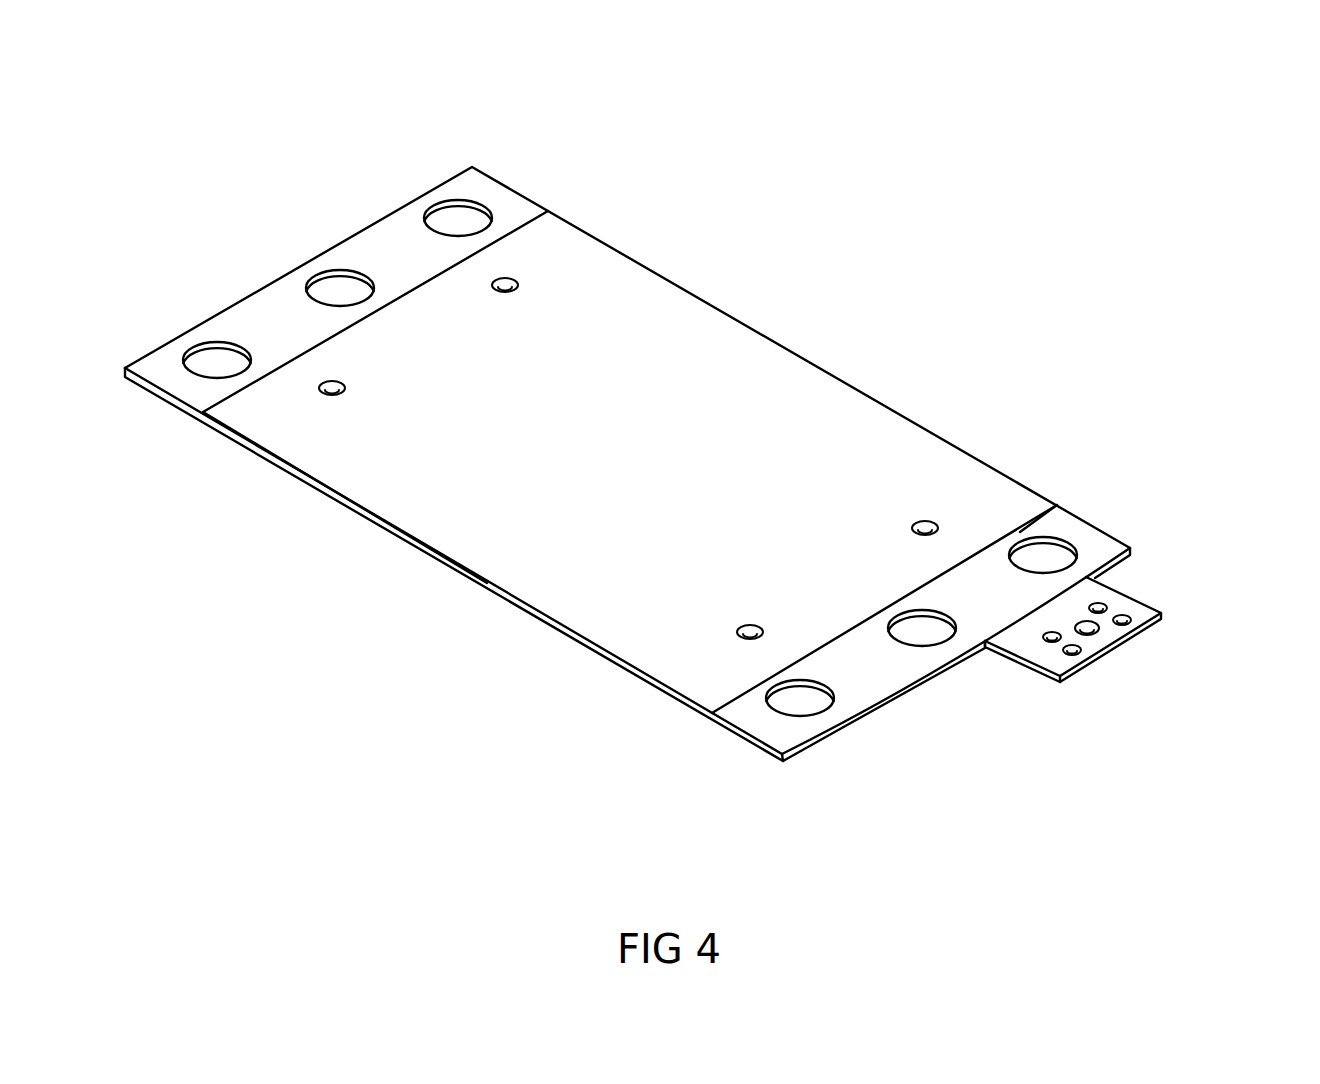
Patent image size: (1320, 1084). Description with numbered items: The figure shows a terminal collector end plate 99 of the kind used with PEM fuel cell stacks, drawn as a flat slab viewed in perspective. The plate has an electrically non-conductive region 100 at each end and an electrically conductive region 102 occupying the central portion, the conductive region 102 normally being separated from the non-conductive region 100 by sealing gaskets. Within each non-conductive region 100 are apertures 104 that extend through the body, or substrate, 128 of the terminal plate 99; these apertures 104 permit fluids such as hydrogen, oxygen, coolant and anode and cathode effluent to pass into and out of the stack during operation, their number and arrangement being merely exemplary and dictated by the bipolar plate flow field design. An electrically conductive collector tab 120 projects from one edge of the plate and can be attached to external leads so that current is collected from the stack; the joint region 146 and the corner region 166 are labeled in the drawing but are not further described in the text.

The terminal collector end plate 99 is at (1066, 335).
The electrically non-conductive region 100 is at (472, 185).
The electrically conductive region 102 is at (868, 423).
The aperture 104 is at (210, 357).
The electrically conductive collector tab 120 is at (1142, 615).
The body or substrate 128 is at (487, 583).
The tab joint 146 is at (975, 648).
The corner portion 166 is at (1020, 532).